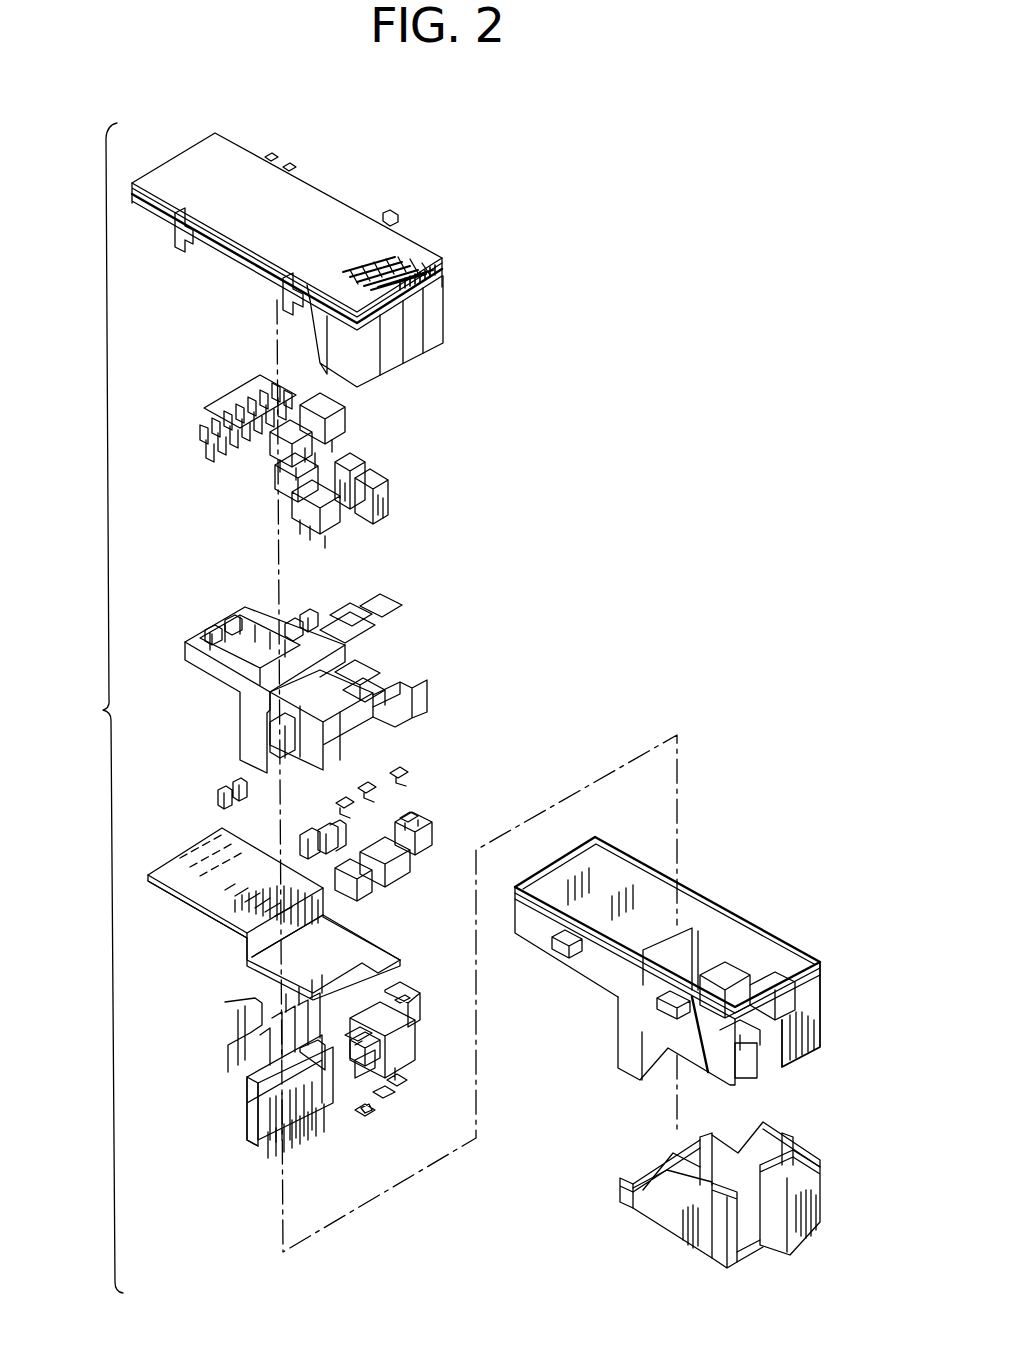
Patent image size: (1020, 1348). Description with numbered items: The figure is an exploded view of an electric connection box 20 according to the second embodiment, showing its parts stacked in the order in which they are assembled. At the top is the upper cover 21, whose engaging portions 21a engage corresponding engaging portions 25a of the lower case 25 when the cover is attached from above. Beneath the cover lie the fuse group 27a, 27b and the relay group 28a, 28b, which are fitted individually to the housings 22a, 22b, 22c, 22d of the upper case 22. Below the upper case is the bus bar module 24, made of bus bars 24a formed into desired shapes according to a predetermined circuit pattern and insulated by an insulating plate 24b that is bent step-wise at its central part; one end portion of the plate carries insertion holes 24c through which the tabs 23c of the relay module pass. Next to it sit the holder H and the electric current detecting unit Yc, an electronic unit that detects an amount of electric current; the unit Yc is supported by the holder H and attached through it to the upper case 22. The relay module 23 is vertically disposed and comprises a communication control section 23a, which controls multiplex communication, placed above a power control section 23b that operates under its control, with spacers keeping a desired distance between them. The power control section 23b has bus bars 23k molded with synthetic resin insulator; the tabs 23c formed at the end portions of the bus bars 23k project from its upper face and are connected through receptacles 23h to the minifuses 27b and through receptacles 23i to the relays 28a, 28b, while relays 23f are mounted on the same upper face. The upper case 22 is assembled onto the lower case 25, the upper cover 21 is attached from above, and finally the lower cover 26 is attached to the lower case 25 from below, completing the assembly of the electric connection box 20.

The electric connection box 20 is at (92, 708).
The upper cover 21 is at (348, 192).
The engaging portions 21a is at (178, 240).
The minifuses 27b is at (240, 402).
The relays 28a is at (330, 410).
The fuses 27a is at (385, 468).
The relays 28b is at (290, 504).
The upper case 22 is at (204, 694).
The housing 22a is at (242, 632).
The housing 22b is at (300, 605).
The housing 22c is at (282, 740).
The housing 22d is at (380, 678).
The receptacles 23h is at (243, 787).
The receptacles 23i is at (322, 830).
The holder H is at (395, 875).
The bus bar module 24 is at (221, 945).
The bus bars 24a is at (185, 905).
The insulating plate 24b is at (353, 943).
The insertion holes 24c is at (200, 848).
The relay module 23 is at (231, 1138).
The communication control section 23a is at (290, 1105).
The power control section 23b is at (242, 1085).
The tabs 23c is at (258, 1010).
The relays 23f is at (310, 1055).
The bus bars 23k is at (245, 1097).
The electric current detecting unit Yc is at (405, 1058).
The lower case 25 is at (707, 880).
The engaging portions 25a is at (565, 952).
The lower cover 26 is at (680, 1205).